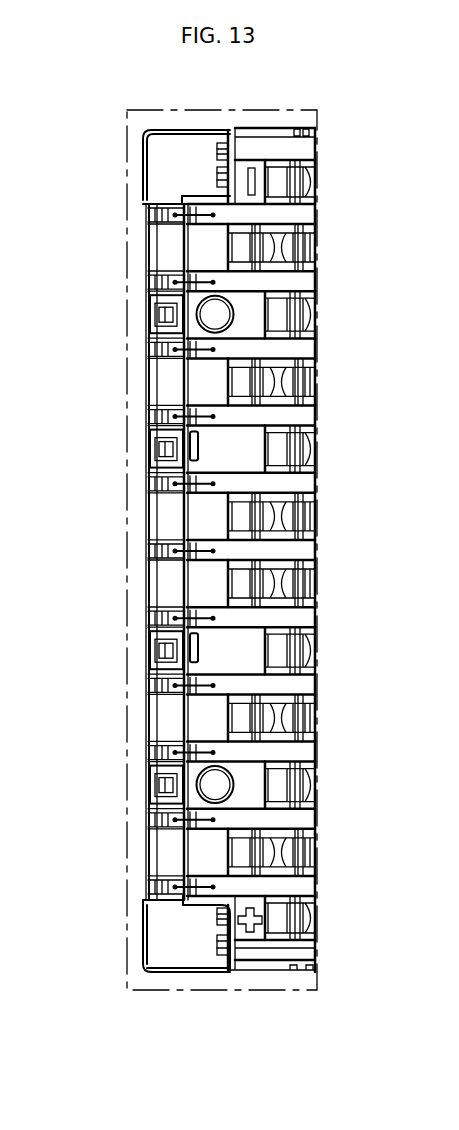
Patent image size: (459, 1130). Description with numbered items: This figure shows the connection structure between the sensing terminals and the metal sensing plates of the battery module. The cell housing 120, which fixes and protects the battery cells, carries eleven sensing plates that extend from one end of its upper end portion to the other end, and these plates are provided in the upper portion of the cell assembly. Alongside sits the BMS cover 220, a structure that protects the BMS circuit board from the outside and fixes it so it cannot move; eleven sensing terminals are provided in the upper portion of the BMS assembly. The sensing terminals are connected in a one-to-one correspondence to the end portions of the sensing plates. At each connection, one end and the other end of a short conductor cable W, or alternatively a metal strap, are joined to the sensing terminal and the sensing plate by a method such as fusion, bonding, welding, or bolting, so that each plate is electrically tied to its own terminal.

The cell housing 120 is at (281, 151).
The BMS cover 220 is at (158, 150).
The conductor cable W is at (184, 905).